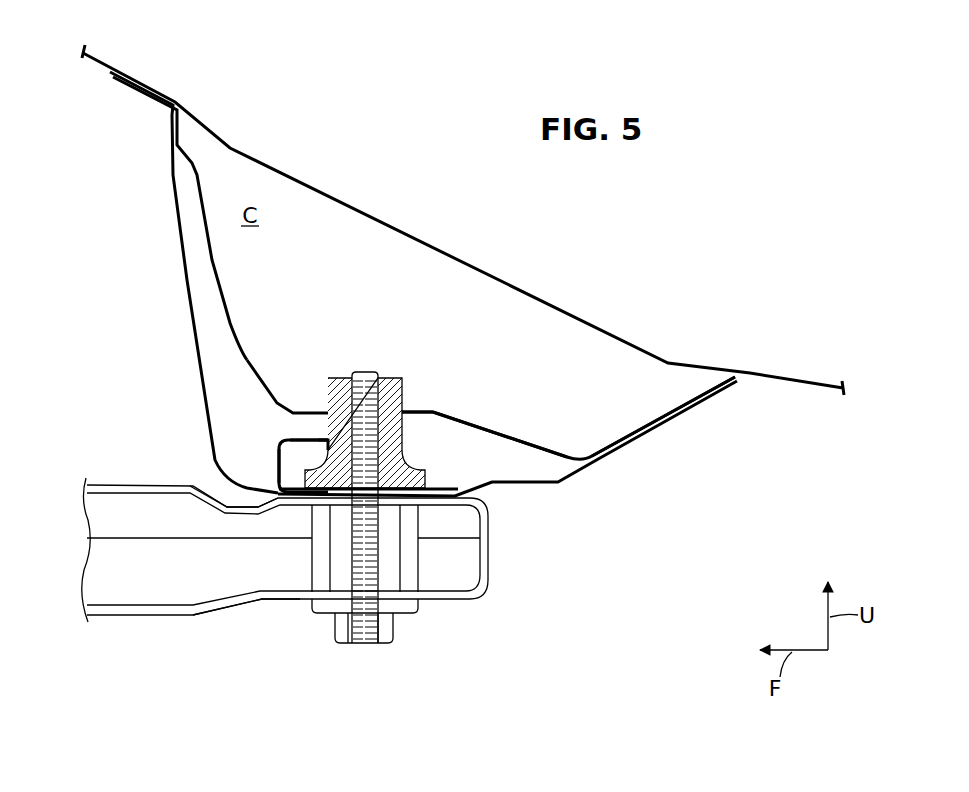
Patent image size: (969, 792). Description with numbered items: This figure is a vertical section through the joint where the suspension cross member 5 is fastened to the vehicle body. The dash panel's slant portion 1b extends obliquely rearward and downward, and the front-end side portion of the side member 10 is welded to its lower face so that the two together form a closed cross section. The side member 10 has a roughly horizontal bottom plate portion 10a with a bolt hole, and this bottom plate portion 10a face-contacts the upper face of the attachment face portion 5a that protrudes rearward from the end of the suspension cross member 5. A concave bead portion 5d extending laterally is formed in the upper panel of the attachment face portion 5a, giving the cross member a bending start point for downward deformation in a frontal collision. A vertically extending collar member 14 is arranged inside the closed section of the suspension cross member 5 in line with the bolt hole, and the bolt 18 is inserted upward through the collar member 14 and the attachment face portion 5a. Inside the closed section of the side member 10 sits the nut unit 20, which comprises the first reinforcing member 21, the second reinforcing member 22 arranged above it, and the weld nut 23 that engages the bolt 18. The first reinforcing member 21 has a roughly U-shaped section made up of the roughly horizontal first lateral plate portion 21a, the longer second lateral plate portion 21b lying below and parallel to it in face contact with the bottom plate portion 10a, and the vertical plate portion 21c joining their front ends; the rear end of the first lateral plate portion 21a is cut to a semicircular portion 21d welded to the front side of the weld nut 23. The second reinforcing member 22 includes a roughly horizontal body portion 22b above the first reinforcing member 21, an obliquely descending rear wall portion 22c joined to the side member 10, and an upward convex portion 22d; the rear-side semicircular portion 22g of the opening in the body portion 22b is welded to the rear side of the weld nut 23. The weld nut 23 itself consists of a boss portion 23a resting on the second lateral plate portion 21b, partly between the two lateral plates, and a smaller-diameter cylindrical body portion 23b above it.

The slant portion 1b is at (600, 337).
The suspension cross member 5 is at (131, 618).
The attachment face portion 5a is at (267, 600).
The bead portion 5d is at (232, 497).
The side member 10 is at (178, 238).
The bottom plate portion 10a is at (462, 494).
The collar member 14 is at (418, 575).
The bolt 18 is at (365, 644).
The nut unit 20 is at (215, 310).
The first reinforcing member 21 is at (269, 438).
The first lateral plate portion 21a is at (285, 435).
The second lateral plate portion 21b is at (439, 482).
The vertical plate portion 21c is at (276, 461).
The semicircular portion 21d is at (322, 434).
The second reinforcing member 22 is at (543, 425).
The body portion 22b is at (504, 430).
The rear wall portion 22c is at (613, 444).
The convex portion 22d is at (250, 360).
The rear-side semicircular portion 22g is at (406, 408).
The weld nut 23 is at (406, 368).
The boss portion 23a is at (281, 493).
The cylindrical body portion 23b is at (387, 377).